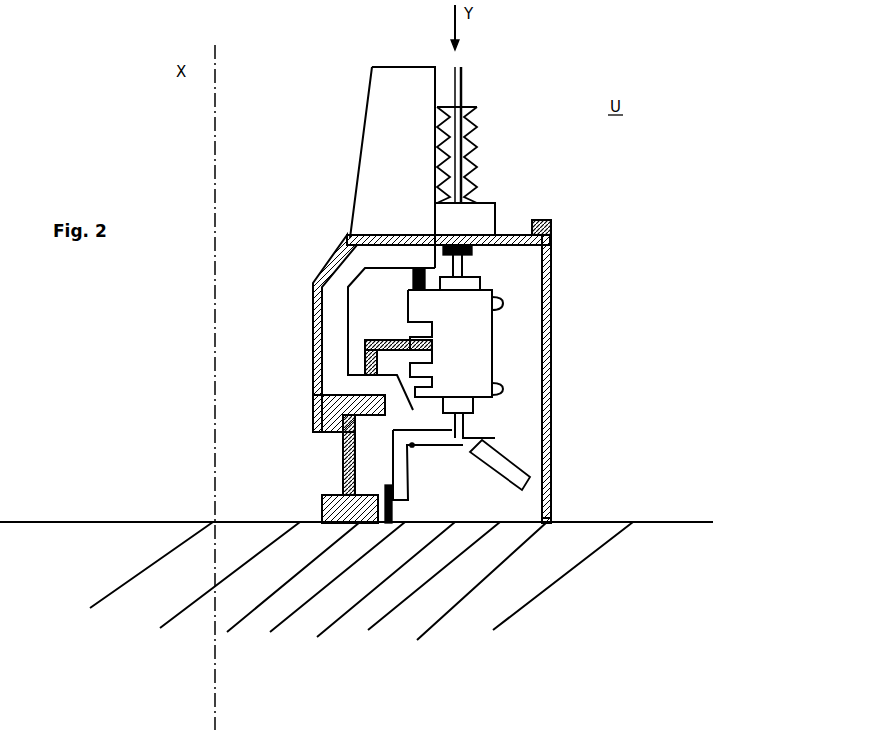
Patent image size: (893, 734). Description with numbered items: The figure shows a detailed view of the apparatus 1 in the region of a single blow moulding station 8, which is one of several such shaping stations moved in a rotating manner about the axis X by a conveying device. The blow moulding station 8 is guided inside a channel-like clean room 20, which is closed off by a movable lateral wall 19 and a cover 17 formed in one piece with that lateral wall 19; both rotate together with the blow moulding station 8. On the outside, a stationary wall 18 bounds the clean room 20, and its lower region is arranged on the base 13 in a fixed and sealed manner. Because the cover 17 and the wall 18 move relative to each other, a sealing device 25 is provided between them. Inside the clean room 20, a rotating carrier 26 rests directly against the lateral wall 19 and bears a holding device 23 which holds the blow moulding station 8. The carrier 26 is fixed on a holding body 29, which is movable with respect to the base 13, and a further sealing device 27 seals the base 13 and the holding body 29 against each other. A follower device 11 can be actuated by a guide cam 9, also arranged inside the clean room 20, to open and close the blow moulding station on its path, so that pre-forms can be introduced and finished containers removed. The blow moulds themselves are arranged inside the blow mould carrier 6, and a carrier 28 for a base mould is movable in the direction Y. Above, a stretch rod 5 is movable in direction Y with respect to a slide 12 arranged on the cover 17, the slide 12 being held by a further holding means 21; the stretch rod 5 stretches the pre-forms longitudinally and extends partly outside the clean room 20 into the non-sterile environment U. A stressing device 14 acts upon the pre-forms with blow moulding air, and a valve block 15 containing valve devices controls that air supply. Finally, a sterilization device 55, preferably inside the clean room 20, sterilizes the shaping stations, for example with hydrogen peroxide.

The apparatus 1 is at (316, 128).
The stretch rod 5 is at (457, 150).
The blow mould carrier 6 is at (480, 366).
The blow moulding station 8 is at (478, 327).
The guide cam 9 is at (395, 505).
The follower device 11 is at (553, 520).
The slide 12 is at (488, 205).
The base 13 is at (595, 570).
The stressing device 14 is at (474, 173).
The valve block 15 is at (497, 250).
The cover 17 is at (398, 235).
The wall 18 is at (551, 300).
The lateral wall 19 is at (313, 328).
The clean room 20 is at (517, 452).
The holding means 21 is at (418, 113).
The holding device 23 is at (390, 340).
The sealing device 25 is at (552, 223).
The carrier 26 is at (338, 385).
The further sealing device 27 is at (322, 508).
The carrier for base mould 28 is at (463, 438).
The holding body 29 is at (343, 472).
The sterilization device 55 is at (540, 507).